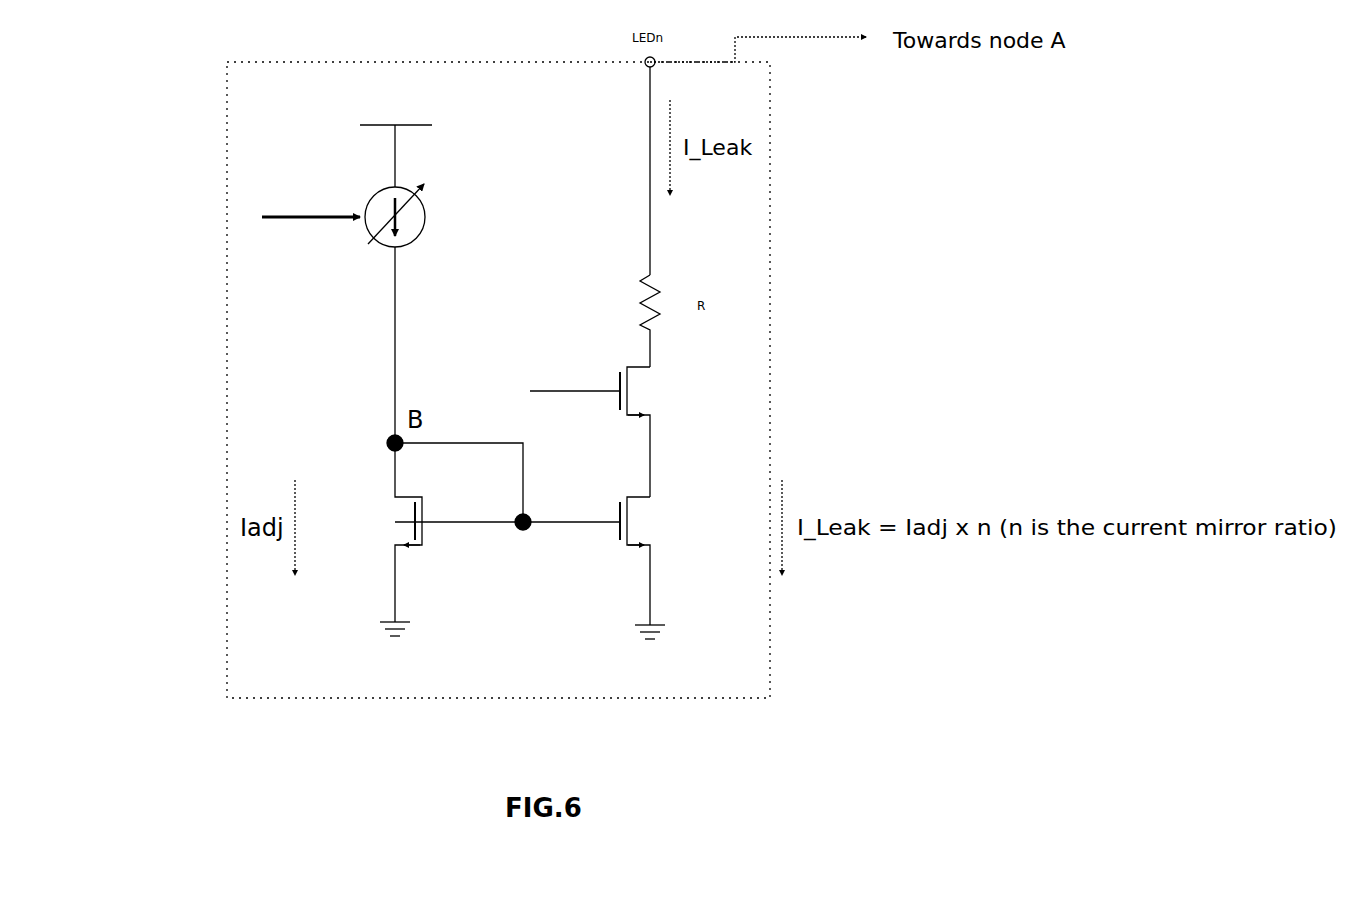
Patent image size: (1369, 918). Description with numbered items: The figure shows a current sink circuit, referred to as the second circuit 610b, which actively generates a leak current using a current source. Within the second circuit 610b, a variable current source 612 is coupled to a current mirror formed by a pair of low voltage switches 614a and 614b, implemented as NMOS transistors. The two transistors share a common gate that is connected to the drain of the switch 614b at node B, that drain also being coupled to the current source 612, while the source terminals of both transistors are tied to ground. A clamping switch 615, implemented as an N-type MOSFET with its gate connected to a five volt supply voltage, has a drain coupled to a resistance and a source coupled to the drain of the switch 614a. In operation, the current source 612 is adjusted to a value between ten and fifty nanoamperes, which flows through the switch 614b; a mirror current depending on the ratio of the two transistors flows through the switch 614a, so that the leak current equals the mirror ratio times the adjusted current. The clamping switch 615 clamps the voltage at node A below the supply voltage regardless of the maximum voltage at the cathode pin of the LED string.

The second circuit 610b is at (227, 282).
The variable current source 612 is at (375, 195).
The low voltage switch 614a is at (645, 495).
The low voltage switch 614b is at (396, 492).
The clamping switch 615 is at (628, 365).